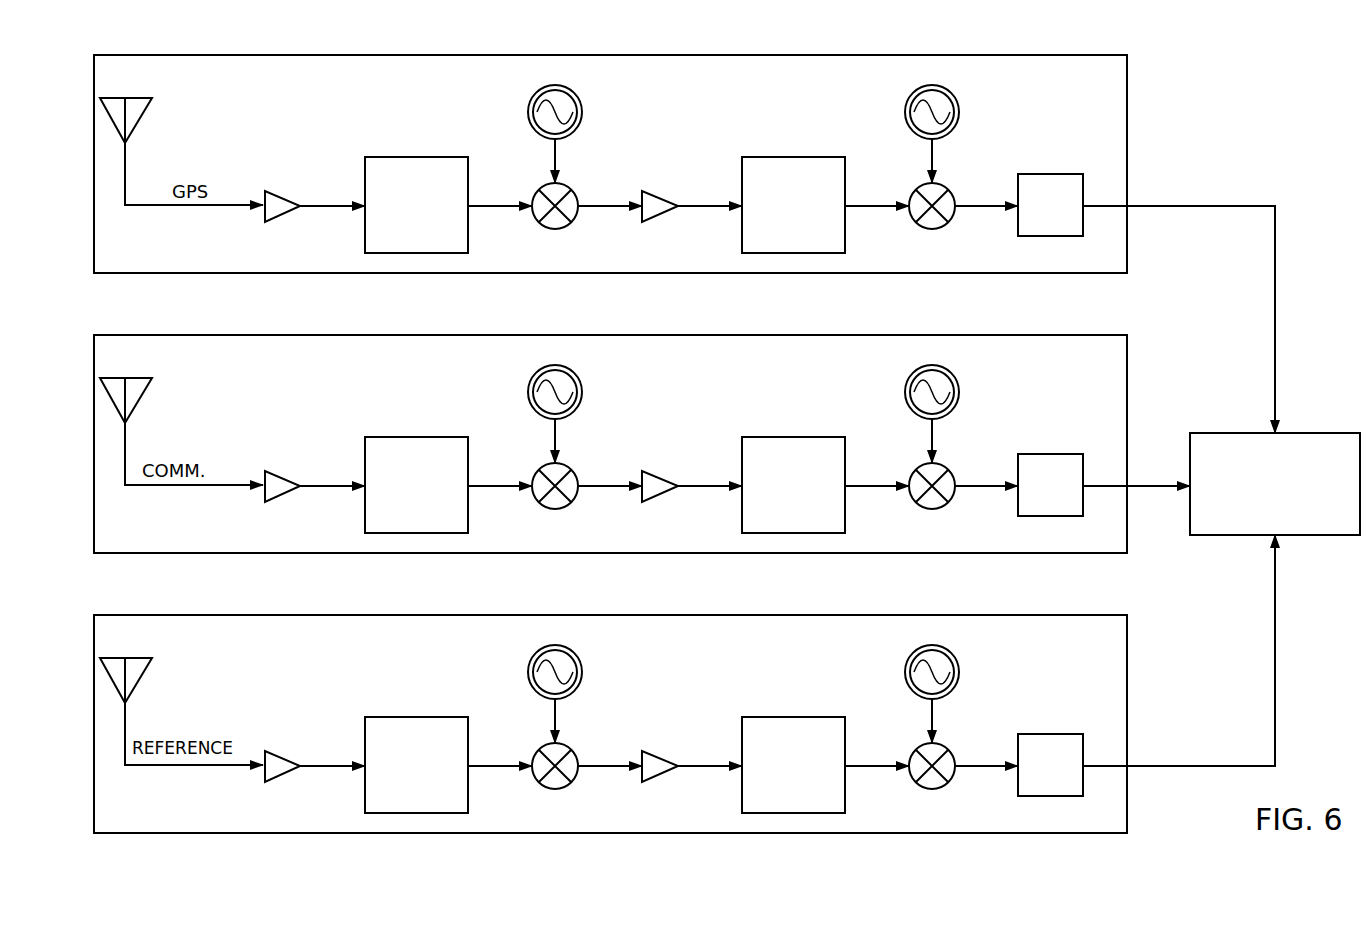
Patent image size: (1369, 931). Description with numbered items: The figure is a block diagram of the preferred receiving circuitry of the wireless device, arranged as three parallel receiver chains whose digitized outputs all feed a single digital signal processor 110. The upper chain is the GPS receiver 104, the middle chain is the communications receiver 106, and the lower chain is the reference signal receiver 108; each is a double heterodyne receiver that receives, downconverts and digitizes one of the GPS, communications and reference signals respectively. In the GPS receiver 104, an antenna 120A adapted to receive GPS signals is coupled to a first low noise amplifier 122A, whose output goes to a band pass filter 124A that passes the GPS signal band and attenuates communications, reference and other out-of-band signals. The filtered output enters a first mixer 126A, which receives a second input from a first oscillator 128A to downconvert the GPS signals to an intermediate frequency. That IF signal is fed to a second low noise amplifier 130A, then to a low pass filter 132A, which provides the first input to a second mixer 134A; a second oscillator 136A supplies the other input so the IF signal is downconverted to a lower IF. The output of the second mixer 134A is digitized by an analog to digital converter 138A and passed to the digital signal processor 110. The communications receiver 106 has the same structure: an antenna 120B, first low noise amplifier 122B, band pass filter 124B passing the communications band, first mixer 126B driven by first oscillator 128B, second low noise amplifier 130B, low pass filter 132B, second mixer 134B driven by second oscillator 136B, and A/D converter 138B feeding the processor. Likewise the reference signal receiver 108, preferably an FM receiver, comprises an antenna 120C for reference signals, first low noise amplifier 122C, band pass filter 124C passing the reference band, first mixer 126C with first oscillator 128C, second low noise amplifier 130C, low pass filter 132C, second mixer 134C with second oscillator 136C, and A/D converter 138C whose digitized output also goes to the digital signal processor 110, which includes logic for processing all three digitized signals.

The GPS receiver 104 is at (731, 55).
The communications receiver 106 is at (610, 428).
The reference signal receiver 108 is at (610, 708).
The digital signal processor 110 is at (1303, 433).
The antenna 120A is at (133, 98).
The antenna 120B is at (181, 415).
The antenna 120C is at (181, 695).
The first low noise amplifier 122A is at (271, 191).
The first low noise amplifier 122B is at (315, 472).
The first low noise amplifier 122C is at (315, 752).
The band pass filter 124A is at (412, 157).
The band pass filter 124B is at (448, 470).
The band pass filter 124C is at (448, 750).
The first mixer 126A is at (555, 229).
The first mixer 126B is at (587, 501).
The first mixer 126C is at (587, 781).
The first oscillator 128A is at (578, 98).
The first oscillator 128B is at (586, 404).
The first oscillator 128C is at (586, 684).
The second low noise amplifier 130A is at (649, 191).
The second low noise amplifier 130B is at (692, 472).
The second low noise amplifier 130C is at (692, 752).
The low pass filter 132A is at (790, 157).
The low pass filter 132B is at (825, 470).
The low pass filter 132C is at (825, 750).
The second mixer 134A is at (932, 229).
The second mixer 134B is at (963, 501).
The second mixer 134C is at (963, 781).
The second oscillator 136A is at (955, 98).
The second oscillator 136B is at (963, 404).
The second oscillator 136C is at (963, 684).
The analog to digital converter 138A is at (1030, 174).
The A/D converter 138B is at (1058, 469).
The A/D converter 138C is at (1059, 749).